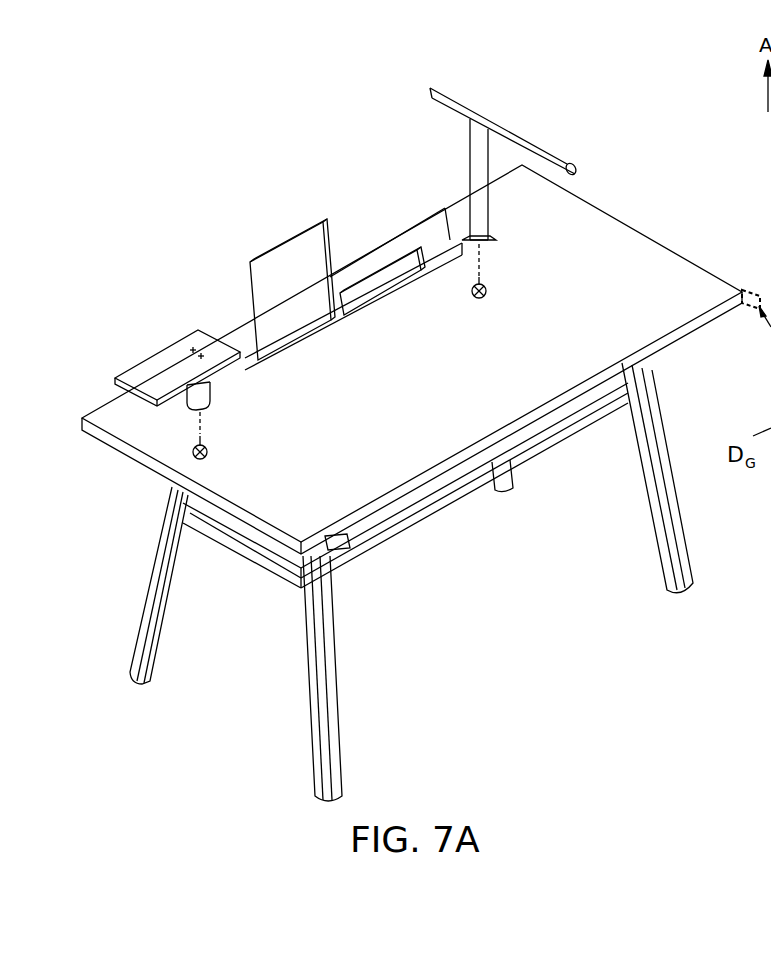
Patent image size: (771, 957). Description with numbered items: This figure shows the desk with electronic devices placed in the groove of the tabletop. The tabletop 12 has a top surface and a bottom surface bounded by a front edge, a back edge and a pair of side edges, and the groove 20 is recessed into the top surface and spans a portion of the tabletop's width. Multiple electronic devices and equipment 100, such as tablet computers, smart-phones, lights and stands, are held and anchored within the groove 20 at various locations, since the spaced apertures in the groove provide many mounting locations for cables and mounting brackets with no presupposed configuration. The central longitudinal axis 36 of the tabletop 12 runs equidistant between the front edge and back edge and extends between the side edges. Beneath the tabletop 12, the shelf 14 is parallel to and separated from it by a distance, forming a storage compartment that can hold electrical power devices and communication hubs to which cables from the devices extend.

The tabletop 12 is at (138, 424).
The shelf 14 is at (394, 513).
The groove 20 is at (170, 407).
The electronic devices and equipment 100 is at (478, 158).
The central longitudinal axis 36 is at (756, 280).